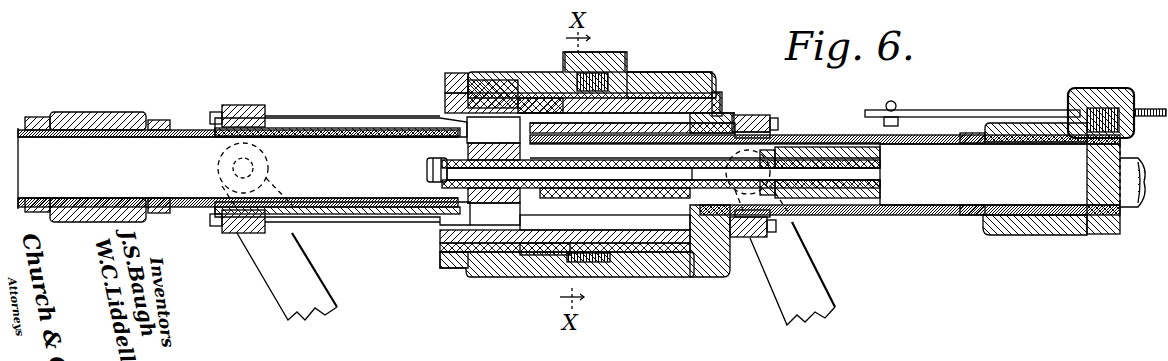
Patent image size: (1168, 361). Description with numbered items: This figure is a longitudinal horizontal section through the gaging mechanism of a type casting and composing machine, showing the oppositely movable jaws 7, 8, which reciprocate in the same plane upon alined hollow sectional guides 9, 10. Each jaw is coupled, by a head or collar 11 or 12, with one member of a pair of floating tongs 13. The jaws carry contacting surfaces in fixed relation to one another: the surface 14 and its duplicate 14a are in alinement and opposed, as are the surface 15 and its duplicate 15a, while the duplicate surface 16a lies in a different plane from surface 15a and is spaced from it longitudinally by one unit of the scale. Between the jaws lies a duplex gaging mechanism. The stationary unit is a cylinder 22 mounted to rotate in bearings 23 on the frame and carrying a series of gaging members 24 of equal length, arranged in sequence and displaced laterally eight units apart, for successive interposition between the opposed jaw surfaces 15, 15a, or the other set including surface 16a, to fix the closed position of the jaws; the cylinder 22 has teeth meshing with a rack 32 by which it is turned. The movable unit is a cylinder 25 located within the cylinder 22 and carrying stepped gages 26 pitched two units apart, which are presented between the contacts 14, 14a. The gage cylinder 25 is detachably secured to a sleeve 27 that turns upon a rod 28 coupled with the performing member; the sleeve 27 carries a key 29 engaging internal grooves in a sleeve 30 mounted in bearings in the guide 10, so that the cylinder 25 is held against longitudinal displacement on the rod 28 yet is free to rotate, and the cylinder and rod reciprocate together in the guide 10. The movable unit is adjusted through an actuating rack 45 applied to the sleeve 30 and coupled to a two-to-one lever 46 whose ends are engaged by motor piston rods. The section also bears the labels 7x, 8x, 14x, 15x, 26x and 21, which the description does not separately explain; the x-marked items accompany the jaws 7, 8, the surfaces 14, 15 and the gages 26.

The jaw 7 is at (368, 218).
The upper clamp bar 7x is at (338, 120).
The jaw 8 is at (722, 240).
The upper clamp nut 8x is at (715, 118).
The hollow sectional guide 9 is at (198, 207).
The hollow sectional guide 10 is at (920, 212).
The head or collar 11 is at (248, 108).
The head or collar 12 is at (765, 122).
The floating tongs 13 is at (536, 273).
The contacting surface 14 is at (447, 178).
The bolt socket 14x is at (470, 130).
The contacting surface 14a is at (592, 72).
The contacting surface 15 is at (470, 262).
The upper bearing ring 15x is at (445, 100).
The contacting surface 15a is at (515, 96).
The contacting surface 16a is at (505, 262).
The plate 21 is at (445, 106).
The cylinder 22 is at (714, 92).
The bearings 23 is at (665, 78).
The gaging members 24 is at (485, 70).
The cylinder 25 is at (565, 170).
The stepped gages 26 is at (445, 256).
The upper flange 26x is at (470, 48).
The sleeve 27 is at (650, 168).
The rod 28 is at (663, 174).
The key 29 is at (815, 152).
The sleeve 30 is at (995, 236).
The rack 32 is at (620, 62).
The actuating rack 45 is at (1105, 105).
The two to one lever 46 is at (990, 115).